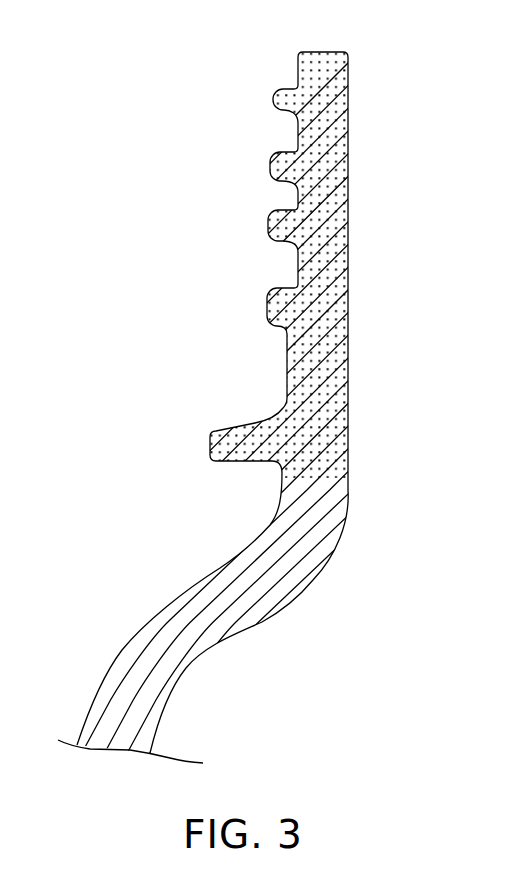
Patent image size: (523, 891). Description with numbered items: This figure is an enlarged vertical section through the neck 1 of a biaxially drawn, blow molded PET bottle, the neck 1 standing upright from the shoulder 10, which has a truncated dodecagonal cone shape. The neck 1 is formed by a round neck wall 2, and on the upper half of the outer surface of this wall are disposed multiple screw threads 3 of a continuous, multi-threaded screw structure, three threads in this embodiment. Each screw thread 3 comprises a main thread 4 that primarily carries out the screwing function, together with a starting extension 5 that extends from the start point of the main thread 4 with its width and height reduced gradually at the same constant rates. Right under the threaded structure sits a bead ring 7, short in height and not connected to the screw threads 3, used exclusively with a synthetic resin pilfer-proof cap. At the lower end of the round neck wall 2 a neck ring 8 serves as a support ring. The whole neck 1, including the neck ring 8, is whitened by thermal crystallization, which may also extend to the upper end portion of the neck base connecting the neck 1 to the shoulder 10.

The neck 1 is at (238, 68).
The round neck wall 2 is at (332, 168).
The screw threads 3 is at (265, 108).
The main thread 4 is at (297, 181).
The starting extension 5 is at (272, 96).
The bead ring 7 is at (286, 324).
The neck ring 8 is at (222, 447).
The shoulder 10 is at (177, 617).